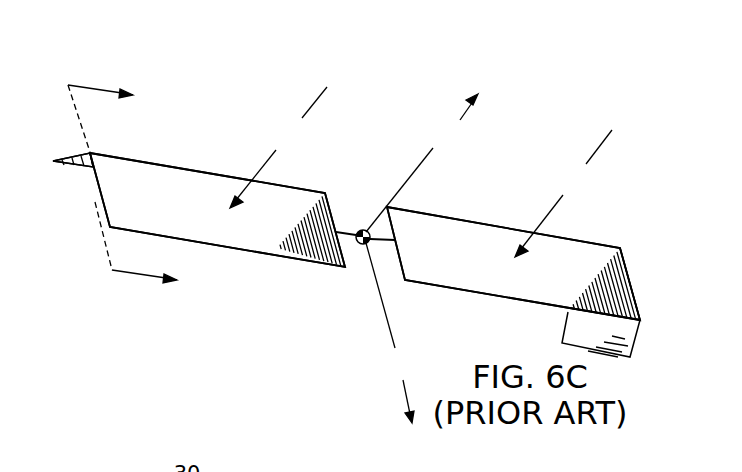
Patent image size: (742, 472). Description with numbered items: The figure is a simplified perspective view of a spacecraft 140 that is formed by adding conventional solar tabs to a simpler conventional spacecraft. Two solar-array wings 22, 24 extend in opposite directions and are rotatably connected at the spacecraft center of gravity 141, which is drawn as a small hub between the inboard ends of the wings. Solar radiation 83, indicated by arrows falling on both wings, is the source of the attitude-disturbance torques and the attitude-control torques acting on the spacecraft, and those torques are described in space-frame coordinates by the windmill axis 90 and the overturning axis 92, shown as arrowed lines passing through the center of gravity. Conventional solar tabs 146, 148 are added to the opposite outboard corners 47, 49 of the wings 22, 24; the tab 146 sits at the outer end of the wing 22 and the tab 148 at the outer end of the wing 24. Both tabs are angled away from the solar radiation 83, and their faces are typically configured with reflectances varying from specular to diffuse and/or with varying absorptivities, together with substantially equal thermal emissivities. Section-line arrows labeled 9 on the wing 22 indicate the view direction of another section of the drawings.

The spacecraft 140 is at (258, 120).
The wing 22 is at (158, 173).
The wing 24 is at (602, 258).
The outboard corner 47 is at (93, 153).
The outboard corner 49 is at (637, 300).
The solar tab 146 is at (73, 167).
The solar tab 148 is at (630, 347).
The spacecraft center of gravity 141 is at (362, 230).
The windmill axis 90 is at (422, 163).
The overturning axis 92 is at (390, 333).
The solar radiation 83 is at (421, 172).
The section line 9- 9 is at (131, 188).